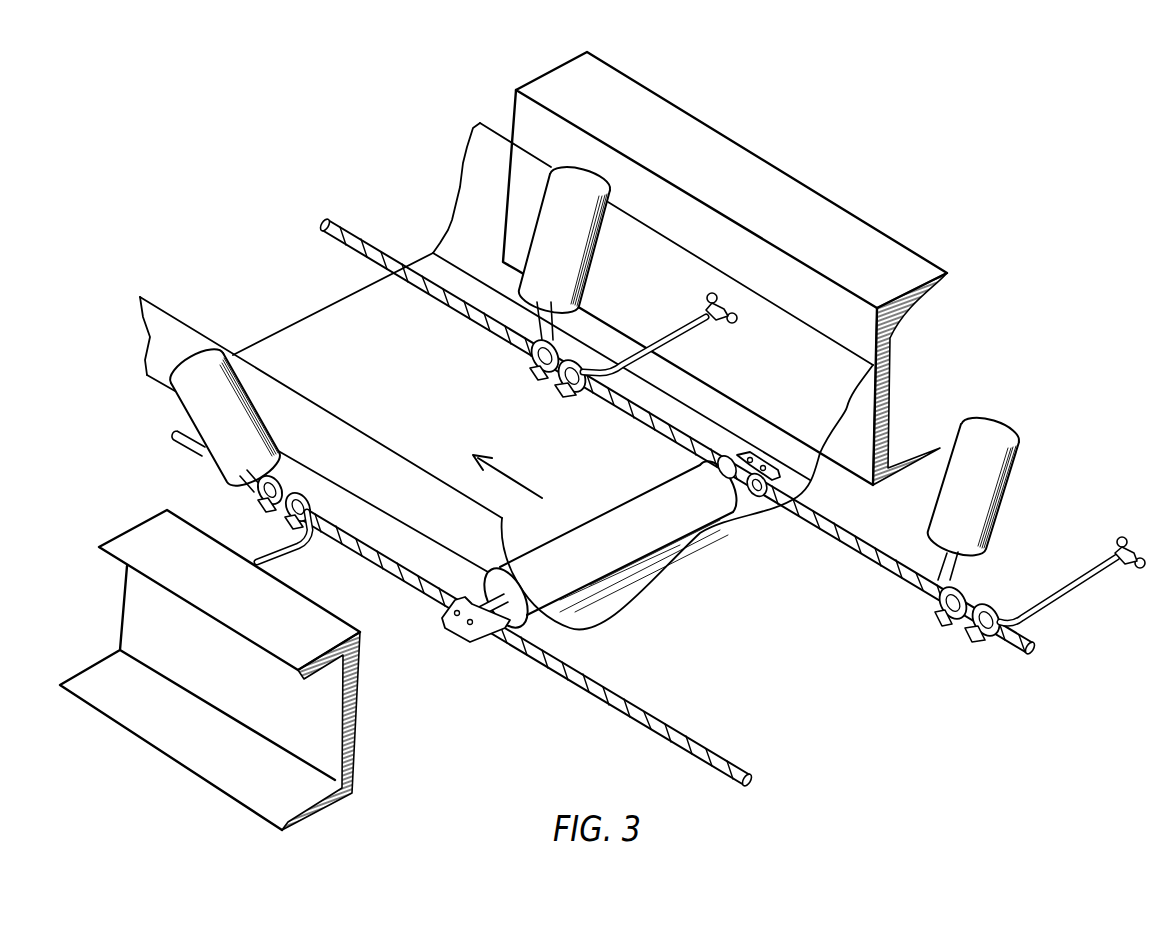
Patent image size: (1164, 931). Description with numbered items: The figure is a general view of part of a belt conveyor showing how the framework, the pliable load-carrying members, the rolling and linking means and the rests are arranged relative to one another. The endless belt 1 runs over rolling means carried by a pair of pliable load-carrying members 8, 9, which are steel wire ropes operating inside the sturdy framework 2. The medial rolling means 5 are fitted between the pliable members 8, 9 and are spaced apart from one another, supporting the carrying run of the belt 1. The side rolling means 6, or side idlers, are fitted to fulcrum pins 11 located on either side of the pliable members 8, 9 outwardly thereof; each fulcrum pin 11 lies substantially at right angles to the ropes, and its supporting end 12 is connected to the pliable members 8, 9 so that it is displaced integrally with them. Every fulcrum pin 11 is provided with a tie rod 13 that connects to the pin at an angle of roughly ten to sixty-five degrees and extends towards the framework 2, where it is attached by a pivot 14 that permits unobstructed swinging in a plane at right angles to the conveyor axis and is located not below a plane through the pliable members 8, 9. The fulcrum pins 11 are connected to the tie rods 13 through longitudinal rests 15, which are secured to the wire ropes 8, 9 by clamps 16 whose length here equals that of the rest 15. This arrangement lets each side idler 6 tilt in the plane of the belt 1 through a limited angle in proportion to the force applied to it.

The endless belt 1 is at (463, 187).
The framework 2 is at (870, 250).
The medial rolling means 5 is at (703, 528).
The side rolling means 6 is at (592, 262).
The pliable load-carrying member 8 is at (1027, 650).
The pliable load-carrying member 9 is at (749, 778).
The fulcrum pin 11 is at (541, 320).
The supporting end 12 is at (532, 343).
The tie rod 13 is at (690, 331).
The pivot 14 is at (707, 303).
The longitudinal rest 15 is at (570, 352).
The clamp 16 is at (557, 388).